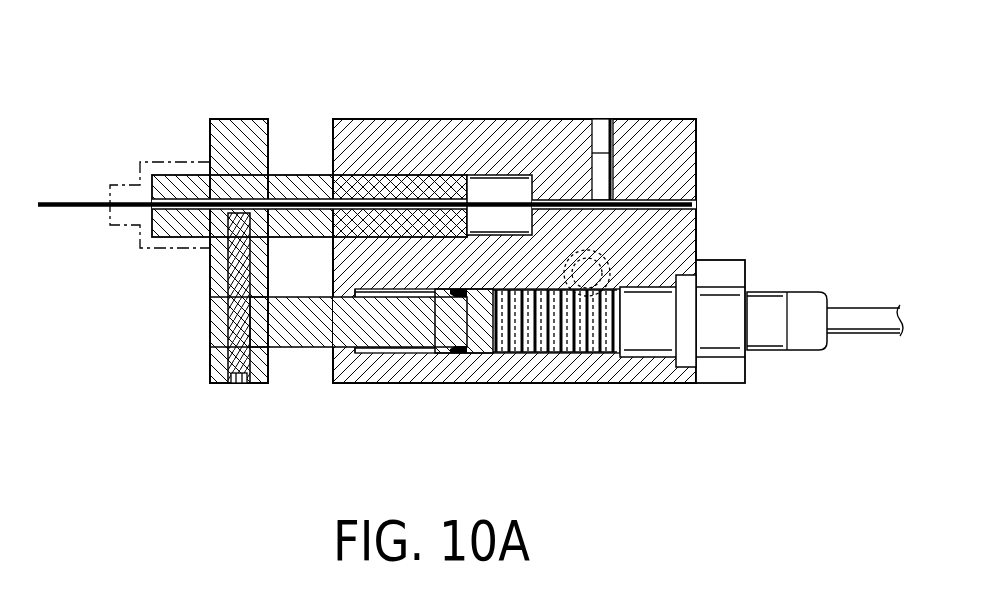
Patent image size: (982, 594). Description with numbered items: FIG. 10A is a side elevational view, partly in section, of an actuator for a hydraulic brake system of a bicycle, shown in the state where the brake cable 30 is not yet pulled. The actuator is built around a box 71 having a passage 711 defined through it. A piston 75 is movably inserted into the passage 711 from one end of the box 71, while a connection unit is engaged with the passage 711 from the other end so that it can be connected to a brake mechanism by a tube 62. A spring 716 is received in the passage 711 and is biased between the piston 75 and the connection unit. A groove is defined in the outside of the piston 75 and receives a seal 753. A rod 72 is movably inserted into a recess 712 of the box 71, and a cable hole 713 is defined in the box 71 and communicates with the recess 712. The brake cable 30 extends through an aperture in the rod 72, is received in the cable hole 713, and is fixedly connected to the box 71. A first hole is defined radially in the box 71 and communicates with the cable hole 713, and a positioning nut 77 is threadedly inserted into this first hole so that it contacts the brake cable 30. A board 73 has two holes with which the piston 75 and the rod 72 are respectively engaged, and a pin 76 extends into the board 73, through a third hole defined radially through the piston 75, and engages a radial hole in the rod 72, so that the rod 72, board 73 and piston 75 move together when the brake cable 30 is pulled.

The brake cable 30 is at (60, 213).
The tube 62 is at (867, 333).
The box 71 is at (393, 132).
The rod 72 is at (165, 180).
The board 73 is at (230, 133).
The piston 75 is at (300, 330).
The pin 76 is at (230, 317).
The positioning nut 77 is at (599, 150).
The passage 711 is at (562, 356).
The recess 712 is at (505, 182).
The cable hole 713 is at (688, 205).
The spring 716 is at (607, 350).
The seal 753 is at (462, 358).